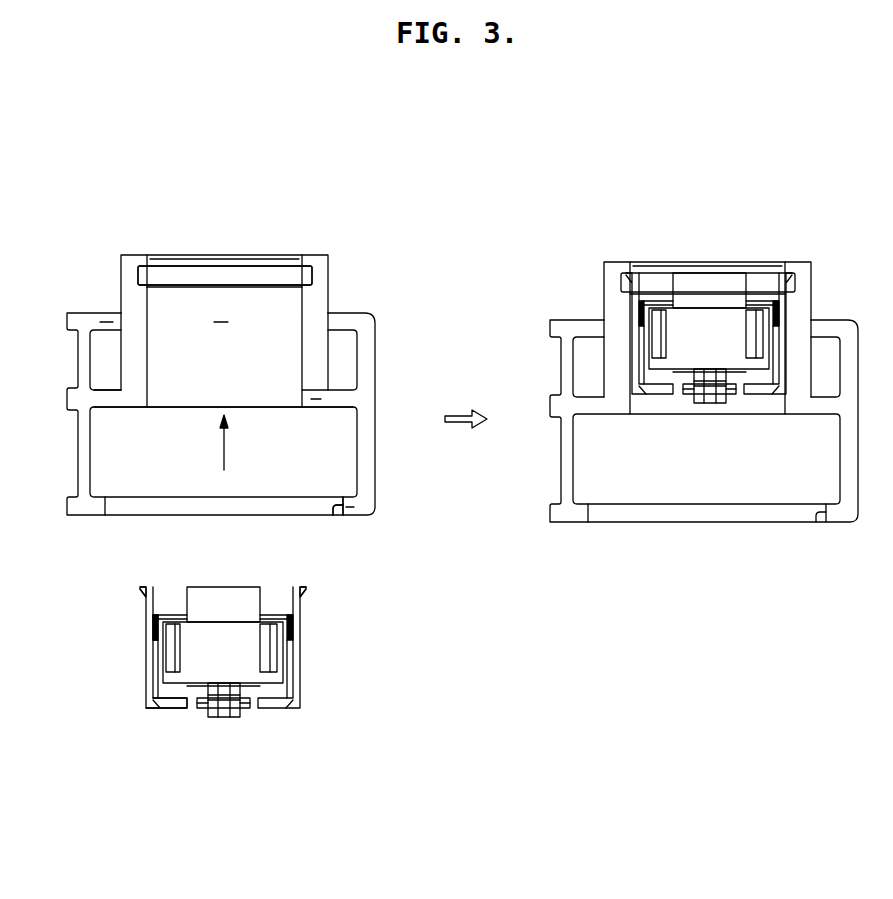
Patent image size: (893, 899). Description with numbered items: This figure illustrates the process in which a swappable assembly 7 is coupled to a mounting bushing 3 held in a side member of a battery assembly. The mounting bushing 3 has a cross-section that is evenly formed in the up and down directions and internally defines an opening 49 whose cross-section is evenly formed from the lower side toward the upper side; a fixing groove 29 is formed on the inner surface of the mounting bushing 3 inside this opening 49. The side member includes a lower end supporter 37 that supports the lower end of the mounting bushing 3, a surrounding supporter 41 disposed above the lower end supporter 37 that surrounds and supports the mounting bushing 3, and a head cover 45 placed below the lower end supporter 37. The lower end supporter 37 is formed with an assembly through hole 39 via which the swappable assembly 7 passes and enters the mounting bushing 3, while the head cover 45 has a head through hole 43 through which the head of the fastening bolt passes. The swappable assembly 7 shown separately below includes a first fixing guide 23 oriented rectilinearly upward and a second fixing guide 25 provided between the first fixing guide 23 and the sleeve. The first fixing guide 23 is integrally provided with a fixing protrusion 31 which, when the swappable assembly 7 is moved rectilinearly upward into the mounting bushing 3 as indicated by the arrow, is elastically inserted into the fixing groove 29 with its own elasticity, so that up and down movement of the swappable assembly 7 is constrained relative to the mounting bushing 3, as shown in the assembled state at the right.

The mounting bushing 3 is at (320, 297).
The swappable assembly 7 is at (312, 662).
The first fixing guide 23 is at (151, 633).
The second fixing guide 25 is at (166, 706).
The fixing groove 29 is at (299, 272).
The fixing protrusion 31 is at (143, 590).
The lower end supporter 37 is at (318, 400).
The assembly through hole 39 is at (292, 405).
The surrounding supporter 41 is at (113, 322).
The head through hole 43 is at (335, 508).
The head cover 45 is at (350, 508).
The opening 49 is at (220, 320).